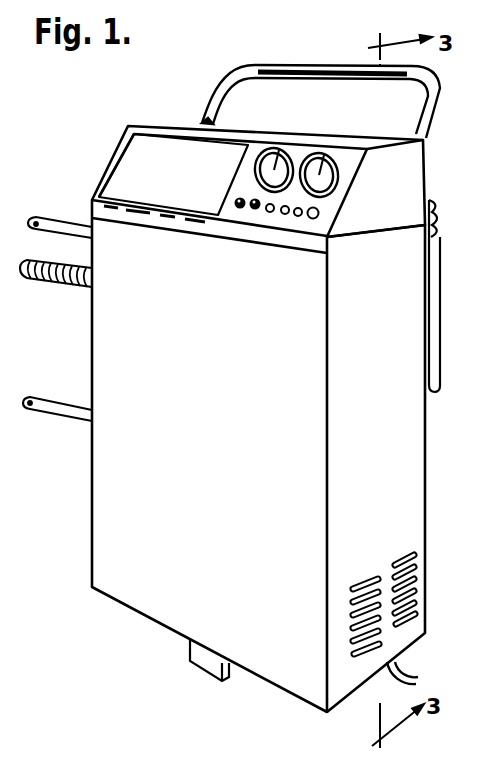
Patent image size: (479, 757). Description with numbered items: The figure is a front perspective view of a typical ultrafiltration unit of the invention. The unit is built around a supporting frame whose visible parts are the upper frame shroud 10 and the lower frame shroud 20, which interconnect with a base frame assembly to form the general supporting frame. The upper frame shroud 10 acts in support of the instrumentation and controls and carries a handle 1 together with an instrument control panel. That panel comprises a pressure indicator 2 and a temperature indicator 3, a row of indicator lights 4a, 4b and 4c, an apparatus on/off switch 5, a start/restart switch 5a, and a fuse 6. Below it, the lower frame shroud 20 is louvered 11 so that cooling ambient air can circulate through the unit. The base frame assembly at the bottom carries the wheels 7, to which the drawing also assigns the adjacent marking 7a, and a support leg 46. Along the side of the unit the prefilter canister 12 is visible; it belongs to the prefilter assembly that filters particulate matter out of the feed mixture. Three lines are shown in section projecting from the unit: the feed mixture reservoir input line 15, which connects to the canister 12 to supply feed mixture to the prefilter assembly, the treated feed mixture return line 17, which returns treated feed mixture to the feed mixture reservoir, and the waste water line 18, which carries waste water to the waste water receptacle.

The handle 1 is at (215, 96).
The pressure indicator 2 is at (280, 150).
The temperature indicator 3 is at (326, 155).
The indicator light 4a is at (270, 213).
The indicator light 4b is at (285, 215).
The indicator light 4c is at (298, 217).
The apparatus on/off switch 5 is at (238, 208).
The start/restart switch 5a is at (254, 209).
The fuse 6 is at (318, 218).
The wheels 7 is at (418, 651).
The axle 7a is at (471, 693).
The upper frame shroud 10 is at (376, 188).
The louvers 11 is at (362, 578).
The prefilter canister 12 is at (438, 262).
The feed mixture reservoir input line 15 is at (62, 284).
The treated feed mixture return line 17 is at (62, 420).
The waste water line 18 is at (62, 218).
The lower frame shroud 20 is at (209, 456).
The support leg 46 is at (190, 658).